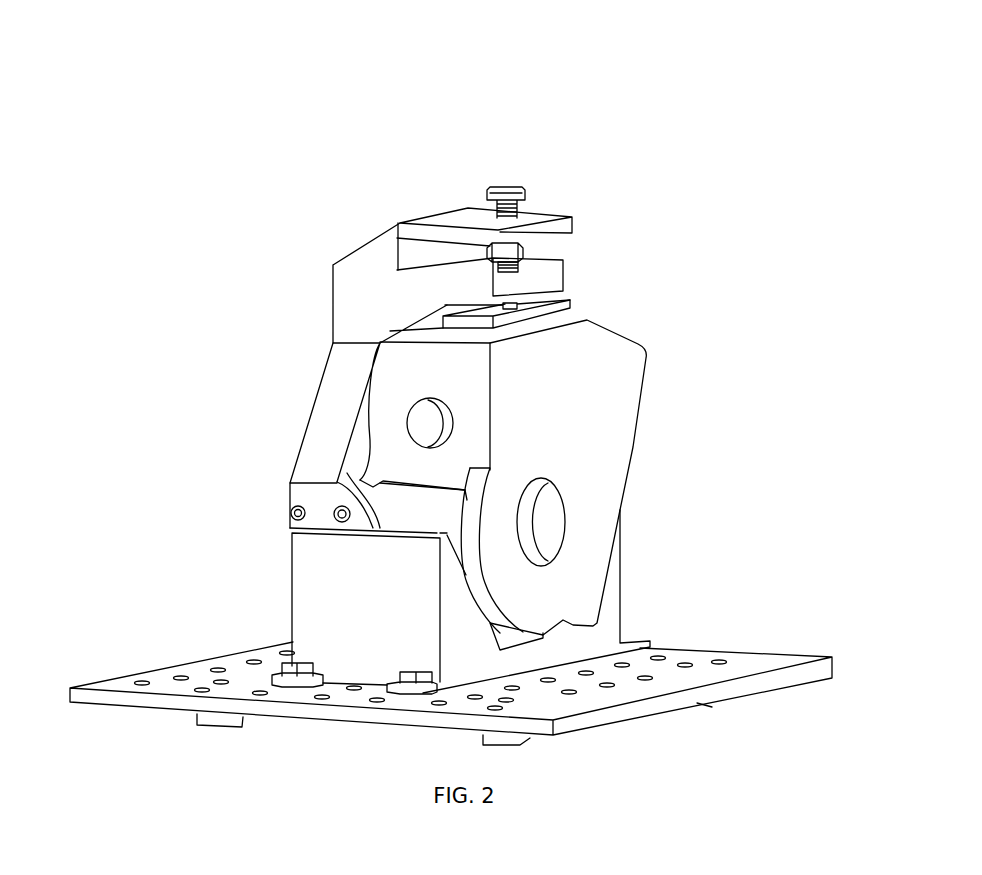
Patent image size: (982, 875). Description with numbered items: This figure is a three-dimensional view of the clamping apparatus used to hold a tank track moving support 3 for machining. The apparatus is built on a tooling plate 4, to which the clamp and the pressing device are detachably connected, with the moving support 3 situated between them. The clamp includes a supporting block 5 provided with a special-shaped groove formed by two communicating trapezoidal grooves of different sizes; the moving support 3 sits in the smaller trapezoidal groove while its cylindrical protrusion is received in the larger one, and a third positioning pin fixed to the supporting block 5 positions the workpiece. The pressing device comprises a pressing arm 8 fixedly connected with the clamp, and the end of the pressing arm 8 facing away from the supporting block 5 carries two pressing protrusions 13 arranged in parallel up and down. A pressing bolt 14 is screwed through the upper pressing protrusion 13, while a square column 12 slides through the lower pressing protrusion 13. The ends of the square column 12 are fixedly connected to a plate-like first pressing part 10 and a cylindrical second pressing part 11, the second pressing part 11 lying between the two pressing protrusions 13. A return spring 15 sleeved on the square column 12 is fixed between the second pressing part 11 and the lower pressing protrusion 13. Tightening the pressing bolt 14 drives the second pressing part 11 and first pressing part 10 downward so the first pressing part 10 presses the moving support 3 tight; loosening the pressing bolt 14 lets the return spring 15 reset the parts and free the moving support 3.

The moving support 3 is at (588, 393).
The tooling plate 4 is at (650, 697).
The supporting block 5 is at (383, 607).
The pressing arm 8 is at (367, 330).
The first pressing part 10 is at (500, 328).
The second pressing part 11 is at (515, 255).
The square column 12 is at (503, 306).
The pressing protrusion 13 is at (533, 285).
The pressing bolt 14 is at (495, 188).
The return spring 15 is at (503, 269).